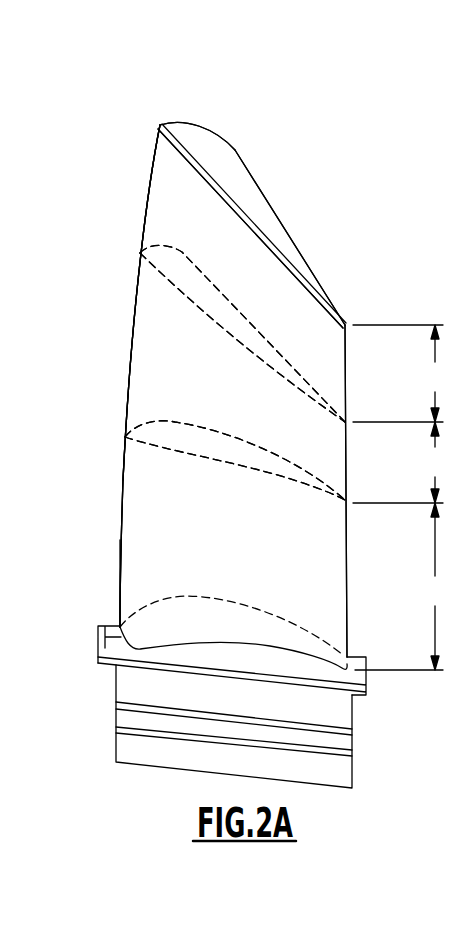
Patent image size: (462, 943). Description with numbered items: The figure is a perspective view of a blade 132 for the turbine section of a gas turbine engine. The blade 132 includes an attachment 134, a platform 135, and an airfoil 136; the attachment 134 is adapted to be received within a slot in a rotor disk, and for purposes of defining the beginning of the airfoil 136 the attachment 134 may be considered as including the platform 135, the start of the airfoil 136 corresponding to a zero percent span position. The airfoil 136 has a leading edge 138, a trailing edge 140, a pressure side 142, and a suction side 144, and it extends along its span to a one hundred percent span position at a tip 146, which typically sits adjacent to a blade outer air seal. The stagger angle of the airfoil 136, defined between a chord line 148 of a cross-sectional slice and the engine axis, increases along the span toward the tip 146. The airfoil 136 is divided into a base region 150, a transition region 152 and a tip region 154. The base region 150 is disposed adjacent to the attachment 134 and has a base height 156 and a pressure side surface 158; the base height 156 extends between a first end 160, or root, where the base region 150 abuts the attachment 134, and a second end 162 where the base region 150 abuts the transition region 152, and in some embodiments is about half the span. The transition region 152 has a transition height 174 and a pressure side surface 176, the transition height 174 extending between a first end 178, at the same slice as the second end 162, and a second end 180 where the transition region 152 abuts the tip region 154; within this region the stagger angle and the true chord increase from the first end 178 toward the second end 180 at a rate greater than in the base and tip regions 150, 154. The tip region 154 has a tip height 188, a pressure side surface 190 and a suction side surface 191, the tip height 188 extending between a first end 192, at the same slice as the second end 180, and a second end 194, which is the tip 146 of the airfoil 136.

The blade 132 is at (357, 165).
The attachment 134 is at (352, 748).
The platform 135 is at (96, 649).
The airfoil 136 is at (353, 281).
The leading edge 138 is at (131, 328).
The trailing edge 140 is at (348, 568).
The pressure side 142 is at (133, 198).
The suction side 144 is at (302, 232).
The tip 146 is at (212, 152).
The chord line 148 is at (236, 198).
The base region 150 is at (246, 549).
The transition region 152 is at (246, 407).
The tip region 154 is at (246, 254).
The base height 156 is at (404, 586).
The pressure side surface 158 is at (122, 573).
The first end 160 is at (106, 637).
The second end 162 is at (125, 440).
The transition height 174 is at (403, 462).
The pressure side surface 176 is at (136, 373).
The first end 178 is at (125, 437).
The second end 180 is at (140, 255).
The tip height 188 is at (403, 373).
The pressure side surface 190 is at (164, 170).
The suction side surface 191 is at (274, 209).
The first end 192 is at (140, 253).
The second end 194 is at (160, 126).